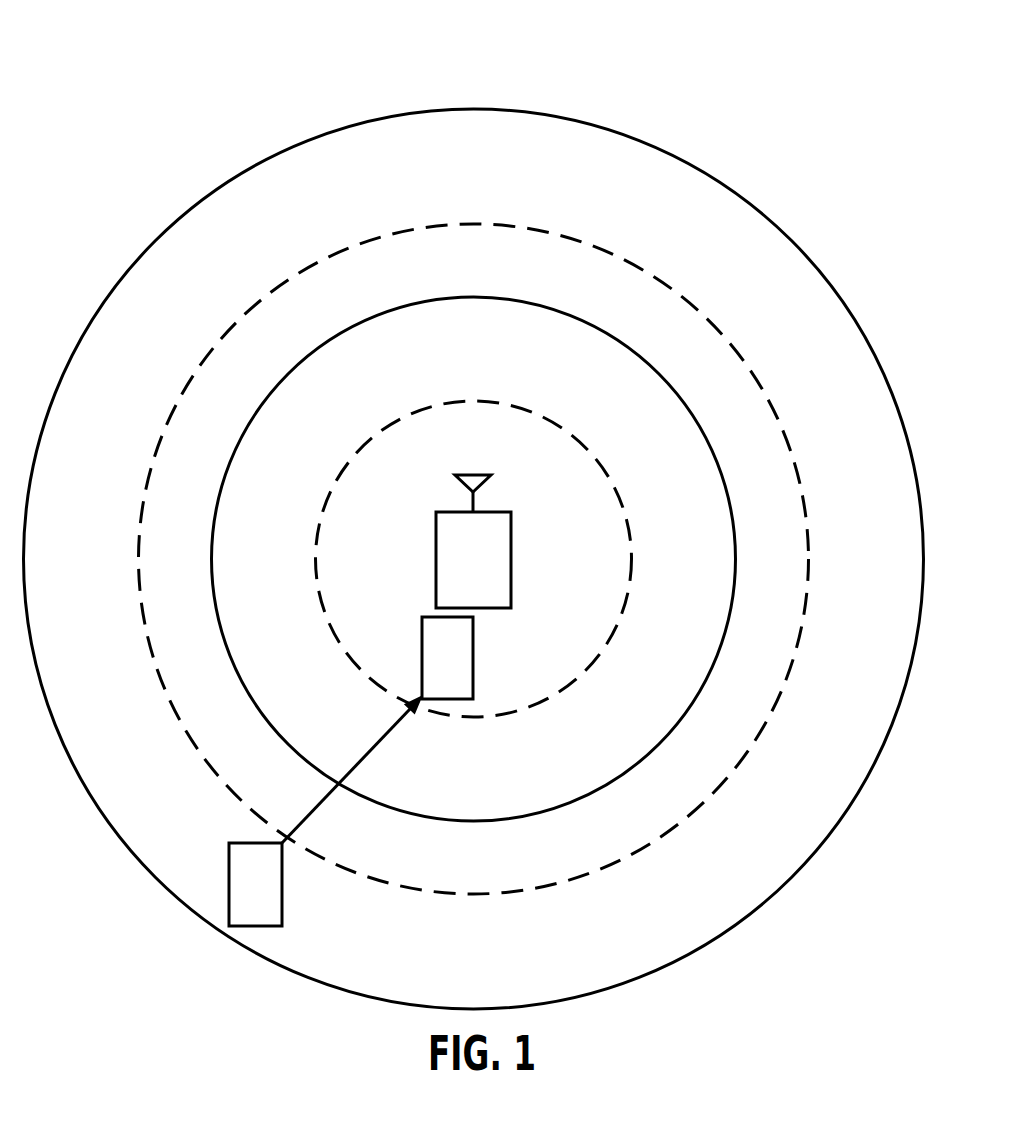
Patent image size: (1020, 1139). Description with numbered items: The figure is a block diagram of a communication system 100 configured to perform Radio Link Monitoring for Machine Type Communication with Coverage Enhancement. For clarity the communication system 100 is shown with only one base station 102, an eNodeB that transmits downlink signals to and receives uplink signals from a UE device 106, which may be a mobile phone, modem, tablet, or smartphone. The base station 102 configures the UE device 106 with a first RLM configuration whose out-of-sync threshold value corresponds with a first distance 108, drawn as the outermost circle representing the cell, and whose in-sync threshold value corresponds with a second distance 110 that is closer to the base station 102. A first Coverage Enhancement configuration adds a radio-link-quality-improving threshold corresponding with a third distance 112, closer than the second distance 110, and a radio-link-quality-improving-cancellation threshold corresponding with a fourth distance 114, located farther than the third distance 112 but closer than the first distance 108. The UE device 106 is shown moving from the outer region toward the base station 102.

The communication system 100 is at (98, 40).
The base station 102 is at (456, 586).
The UE device 106 is at (431, 680).
The first distance 108 is at (102, 305).
The second distance 110 is at (424, 303).
The third distance 112 is at (475, 401).
The fourth distance 114 is at (467, 223).